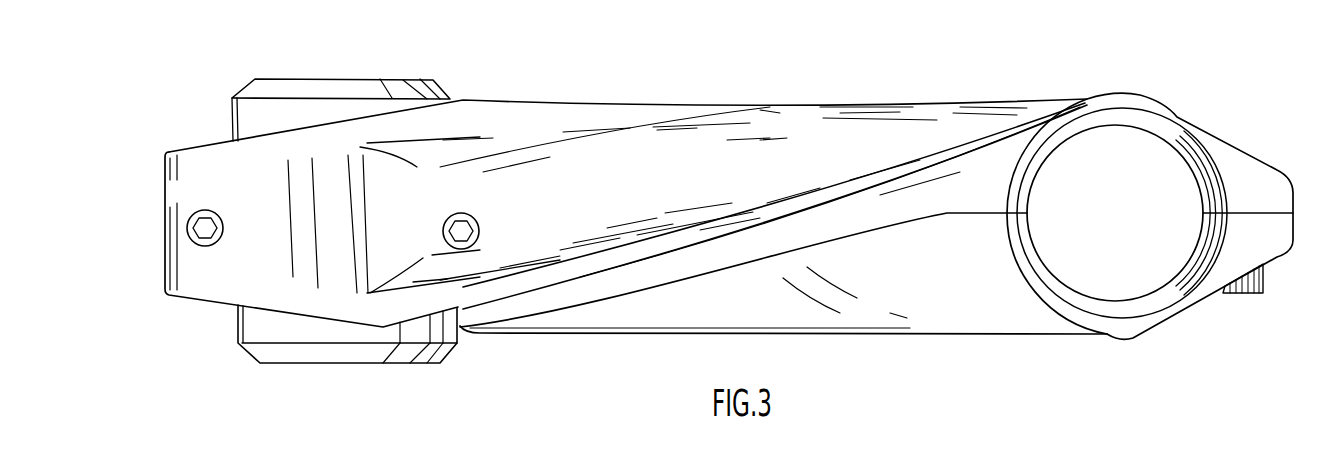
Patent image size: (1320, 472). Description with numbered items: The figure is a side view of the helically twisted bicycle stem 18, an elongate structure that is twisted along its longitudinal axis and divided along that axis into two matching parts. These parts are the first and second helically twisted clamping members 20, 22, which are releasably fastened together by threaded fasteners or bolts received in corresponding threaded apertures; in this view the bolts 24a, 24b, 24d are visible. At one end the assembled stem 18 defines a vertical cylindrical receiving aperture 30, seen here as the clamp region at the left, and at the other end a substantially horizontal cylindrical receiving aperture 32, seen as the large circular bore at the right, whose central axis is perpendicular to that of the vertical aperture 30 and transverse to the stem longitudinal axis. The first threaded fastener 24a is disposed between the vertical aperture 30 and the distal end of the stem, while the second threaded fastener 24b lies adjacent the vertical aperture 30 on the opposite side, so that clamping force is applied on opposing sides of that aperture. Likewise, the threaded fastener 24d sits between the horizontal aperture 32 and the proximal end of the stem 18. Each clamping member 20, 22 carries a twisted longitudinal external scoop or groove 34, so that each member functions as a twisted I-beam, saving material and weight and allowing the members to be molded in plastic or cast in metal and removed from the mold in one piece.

The twisted bicycle stem 18 is at (962, 80).
The first helically twisted clamping member 20 is at (950, 317).
The second helically twisted clamping member 22 is at (893, 105).
The first threaded fastener 24a is at (188, 237).
The second threaded fastener 24b is at (473, 237).
The threaded fastener 24d is at (1265, 278).
The vertical cylindrical receiving aperture 30 is at (322, 73).
The horizontal cylindrical receiving aperture 32 is at (1132, 168).
The twisted longitudinal external scoop 34 is at (607, 195).